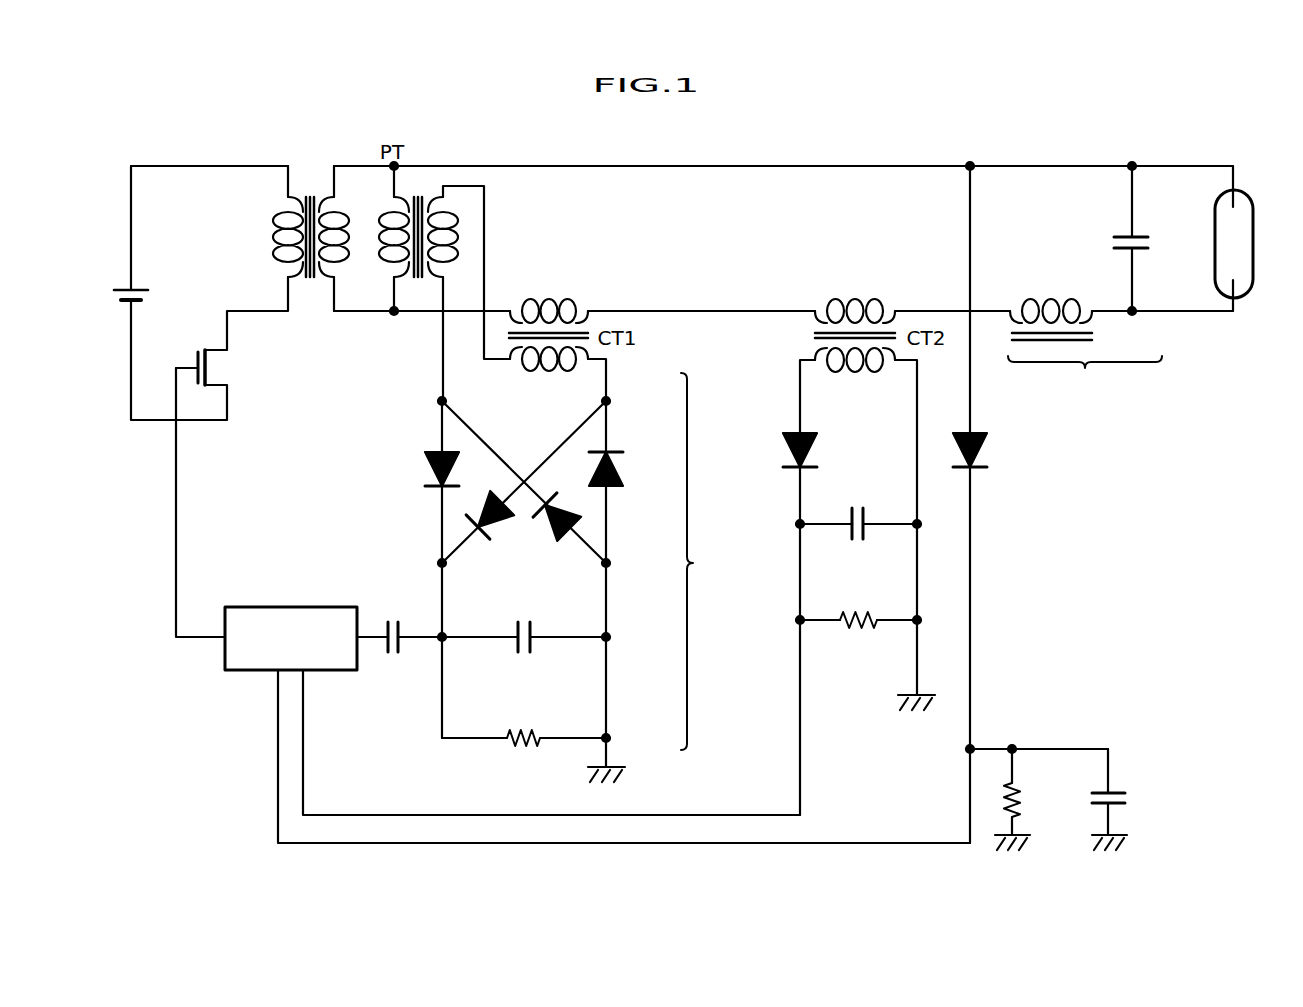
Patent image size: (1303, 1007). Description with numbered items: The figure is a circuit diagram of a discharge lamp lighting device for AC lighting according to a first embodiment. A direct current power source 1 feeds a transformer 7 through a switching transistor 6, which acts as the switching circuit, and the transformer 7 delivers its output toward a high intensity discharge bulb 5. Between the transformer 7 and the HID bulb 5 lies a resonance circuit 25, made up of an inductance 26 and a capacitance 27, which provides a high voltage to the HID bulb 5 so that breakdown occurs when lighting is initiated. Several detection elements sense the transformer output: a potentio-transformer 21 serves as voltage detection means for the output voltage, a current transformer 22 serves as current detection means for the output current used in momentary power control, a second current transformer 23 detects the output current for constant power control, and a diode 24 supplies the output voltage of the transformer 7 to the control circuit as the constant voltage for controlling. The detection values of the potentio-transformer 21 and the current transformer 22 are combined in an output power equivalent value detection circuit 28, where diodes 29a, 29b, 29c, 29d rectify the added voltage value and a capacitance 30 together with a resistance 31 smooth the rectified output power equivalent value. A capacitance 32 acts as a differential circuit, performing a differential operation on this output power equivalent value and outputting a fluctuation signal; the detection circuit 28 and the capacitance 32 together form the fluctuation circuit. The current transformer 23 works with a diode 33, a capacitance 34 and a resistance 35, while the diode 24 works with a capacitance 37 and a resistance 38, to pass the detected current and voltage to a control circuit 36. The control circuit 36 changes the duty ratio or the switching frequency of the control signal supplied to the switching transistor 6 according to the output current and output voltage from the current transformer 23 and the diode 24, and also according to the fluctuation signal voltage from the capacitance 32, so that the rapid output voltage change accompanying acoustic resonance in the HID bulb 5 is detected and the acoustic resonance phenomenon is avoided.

The direct current power source 1 is at (111, 296).
The high intensity discharge bulb 5 is at (1250, 238).
The switching transistor 6 is at (220, 367).
The transformer 7 is at (310, 190).
The potentio-transformer 21 is at (418, 190).
The current transformer 22 is at (559, 294).
The current transformer 23 is at (865, 297).
The diode 24 is at (994, 504).
The resonance circuit 25 is at (1085, 328).
The inductance 26 is at (1062, 300).
The capacitance 27 is at (1158, 238).
The output power equivalent value detection circuit 28 is at (562, 587).
The diode 29a is at (424, 450).
The diode 29b is at (620, 446).
The diode 29c is at (477, 543).
The diode 29d is at (565, 541).
The capacitance 30 is at (524, 664).
The resistance 31 is at (524, 756).
The capacitance 32 is at (395, 613).
The diode 33 is at (790, 431).
The capacitance 34 is at (858, 546).
The resistance 35 is at (858, 641).
The control circuit 36 is at (291, 605).
The capacitance 37 is at (1135, 799).
The resistance 38 is at (1036, 799).